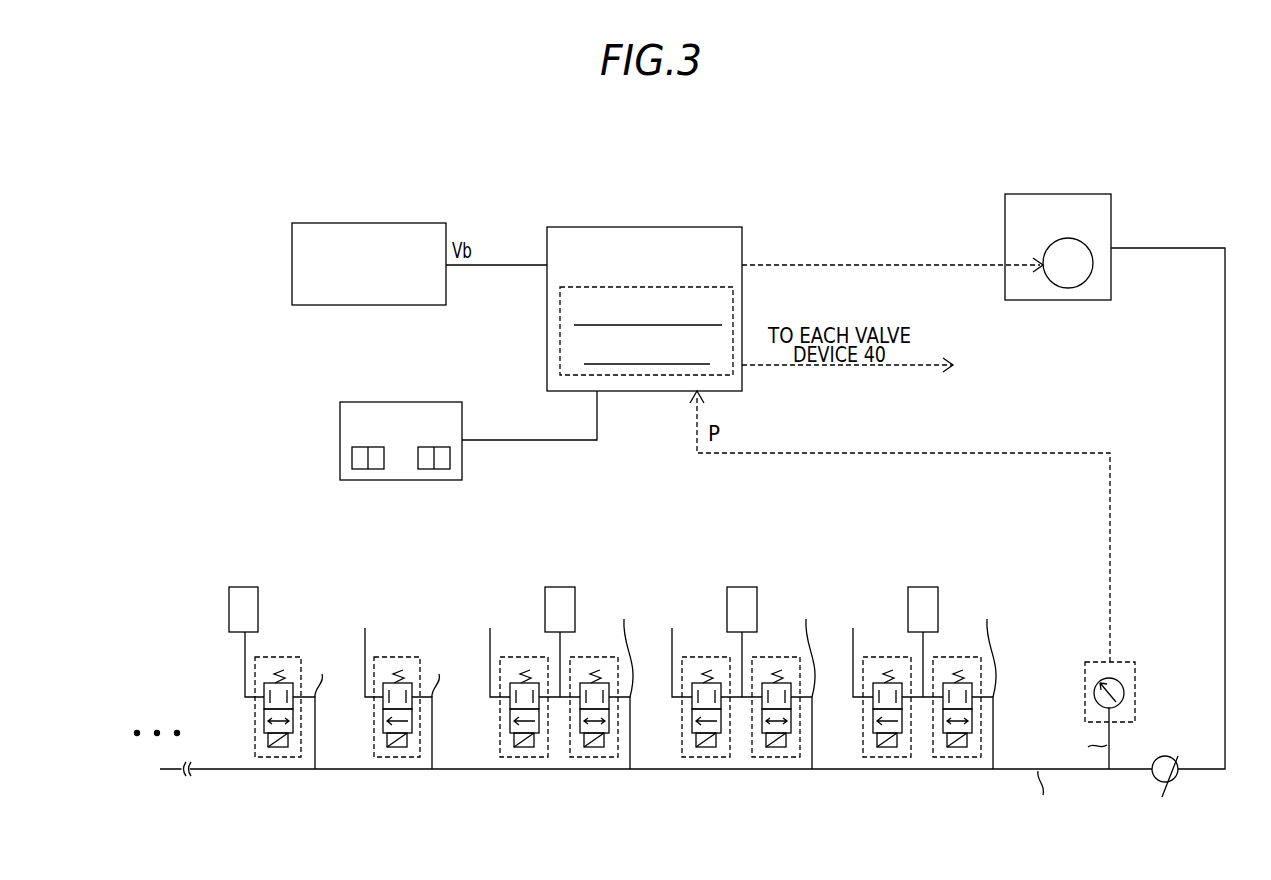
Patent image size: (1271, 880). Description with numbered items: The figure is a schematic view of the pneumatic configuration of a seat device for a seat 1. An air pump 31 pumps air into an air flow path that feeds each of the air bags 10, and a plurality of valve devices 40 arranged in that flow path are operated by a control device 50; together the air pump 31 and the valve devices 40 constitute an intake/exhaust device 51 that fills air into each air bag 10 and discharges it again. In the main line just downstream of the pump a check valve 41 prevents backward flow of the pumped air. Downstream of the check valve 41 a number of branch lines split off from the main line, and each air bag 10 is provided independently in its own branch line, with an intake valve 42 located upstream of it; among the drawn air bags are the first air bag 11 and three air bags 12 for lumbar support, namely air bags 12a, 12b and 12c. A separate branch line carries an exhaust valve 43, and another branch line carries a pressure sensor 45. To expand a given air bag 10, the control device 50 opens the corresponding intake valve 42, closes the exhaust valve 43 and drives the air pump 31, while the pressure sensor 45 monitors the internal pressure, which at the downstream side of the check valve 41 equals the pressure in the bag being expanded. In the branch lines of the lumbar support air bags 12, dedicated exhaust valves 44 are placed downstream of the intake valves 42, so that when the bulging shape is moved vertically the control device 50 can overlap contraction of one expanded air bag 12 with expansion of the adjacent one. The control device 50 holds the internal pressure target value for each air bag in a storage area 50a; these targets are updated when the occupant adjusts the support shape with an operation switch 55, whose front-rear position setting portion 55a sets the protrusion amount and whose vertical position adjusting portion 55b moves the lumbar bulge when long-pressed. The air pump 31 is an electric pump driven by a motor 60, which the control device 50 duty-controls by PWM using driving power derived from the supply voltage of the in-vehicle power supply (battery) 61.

The seat 1 is at (224, 139).
The air bag 10 is at (244, 586).
The tire (first) 11 is at (243, 609).
The air bag for lumbar support 12 is at (741, 609).
The air bag for lumbar support 12a is at (560, 609).
The air bag for lumbar support 12b is at (742, 609).
The air bag for lumbar support 12c is at (923, 609).
The air pump 31 is at (1055, 194).
The valve device 40 is at (724, 689).
The check valve 41 is at (1172, 752).
The intake valve 42 is at (279, 758).
The exhaust valve 43 is at (400, 758).
The exhaust valve 44 is at (525, 758).
The pressure sensor 45 is at (1137, 677).
The control device 50 is at (675, 228).
The storage area 50a is at (647, 376).
The intake/exhaust device 51 is at (191, 840).
The operation switch 55 is at (405, 402).
The front-rear position setting portion 55a is at (450, 469).
The vertical position adjusting portion 55b is at (386, 469).
The motor 60 is at (1068, 289).
The in-vehicle power supply (battery) 61 is at (388, 224).